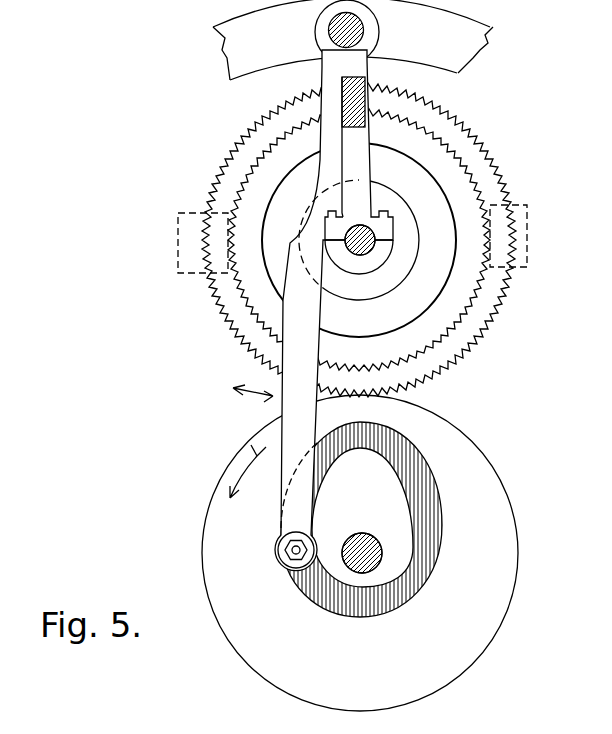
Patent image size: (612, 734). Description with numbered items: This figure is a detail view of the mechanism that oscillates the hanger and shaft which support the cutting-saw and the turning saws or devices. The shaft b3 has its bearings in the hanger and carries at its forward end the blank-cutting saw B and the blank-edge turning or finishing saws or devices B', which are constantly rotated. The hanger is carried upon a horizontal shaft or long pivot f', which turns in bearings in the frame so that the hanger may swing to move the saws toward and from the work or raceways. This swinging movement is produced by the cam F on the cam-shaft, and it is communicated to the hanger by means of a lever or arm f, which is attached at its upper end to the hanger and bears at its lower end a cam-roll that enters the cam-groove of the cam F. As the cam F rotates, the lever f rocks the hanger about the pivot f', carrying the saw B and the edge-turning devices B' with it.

The blank-cutting saw B is at (368, 240).
The blank-edge turning or finishing saws or devices B' is at (359, 240).
The shaft b3 is at (372, 247).
The lever or arm f is at (334, 310).
The horizontal shaft or long pivot f' is at (358, 32).
The cam F is at (360, 553).